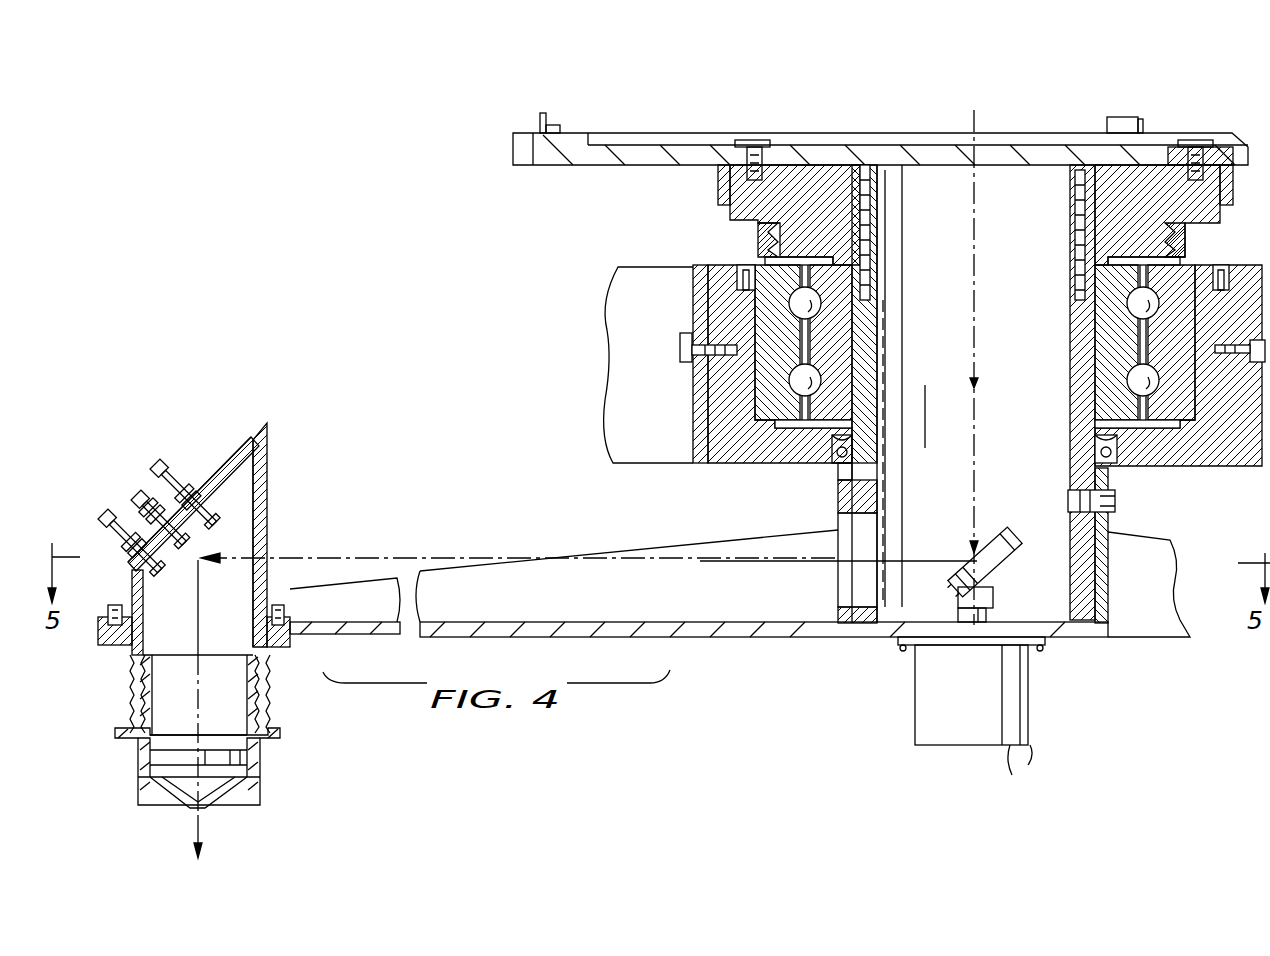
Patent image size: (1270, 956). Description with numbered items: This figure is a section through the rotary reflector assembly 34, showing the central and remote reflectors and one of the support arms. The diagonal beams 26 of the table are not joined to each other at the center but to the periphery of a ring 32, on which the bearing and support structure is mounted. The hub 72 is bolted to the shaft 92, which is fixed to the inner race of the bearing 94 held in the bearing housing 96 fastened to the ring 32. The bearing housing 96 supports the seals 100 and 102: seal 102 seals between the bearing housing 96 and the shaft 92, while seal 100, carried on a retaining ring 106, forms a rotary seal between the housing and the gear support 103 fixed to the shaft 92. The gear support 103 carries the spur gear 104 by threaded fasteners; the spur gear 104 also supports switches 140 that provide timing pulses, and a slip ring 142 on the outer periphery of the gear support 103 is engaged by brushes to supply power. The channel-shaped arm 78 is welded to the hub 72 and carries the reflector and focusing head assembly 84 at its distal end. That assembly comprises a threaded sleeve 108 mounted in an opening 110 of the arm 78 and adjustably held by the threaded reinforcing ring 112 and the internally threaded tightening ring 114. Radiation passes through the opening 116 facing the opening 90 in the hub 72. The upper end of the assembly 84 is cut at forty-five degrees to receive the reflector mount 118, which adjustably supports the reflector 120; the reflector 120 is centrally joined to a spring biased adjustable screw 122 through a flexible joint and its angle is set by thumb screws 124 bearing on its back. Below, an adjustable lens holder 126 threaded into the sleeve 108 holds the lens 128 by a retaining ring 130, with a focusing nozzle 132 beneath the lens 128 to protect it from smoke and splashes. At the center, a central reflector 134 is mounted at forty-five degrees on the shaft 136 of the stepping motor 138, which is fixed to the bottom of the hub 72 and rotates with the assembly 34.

The diagonal beams 26 is at (625, 285).
The ring 32 is at (700, 432).
The rotary reflector assembly 34 is at (620, 542).
The hub 72 is at (840, 485).
The arm 78 is at (732, 637).
The reflector and focusing head assembly 84 is at (272, 452).
The opening 90 is at (840, 585).
The shaft 92 is at (1072, 410).
The bearing 94 is at (1180, 270).
The bearing housing 96 is at (1180, 467).
The seal 100 is at (762, 236).
The seal 102 is at (1108, 466).
The gear support 103 is at (1147, 182).
The spur gear 104 is at (550, 162).
The retaining ring 106 is at (740, 268).
The threaded sleeve 108 is at (132, 676).
The opening 110 is at (130, 627).
The threaded reinforcing ring 112 is at (285, 612).
The internally threaded tightening ring 114 is at (290, 645).
The opening 116 is at (262, 522).
The reflector mount 118 is at (150, 495).
The reflector 120 is at (175, 578).
The spring biased adjustable screw 122 is at (140, 510).
The thumb screws 124 is at (185, 482).
The adjustable lens holder 126 is at (270, 745).
The lens 128 is at (255, 765).
The retaining ring 130 is at (262, 700).
The focusing nozzle 132 is at (225, 808).
The central reflector 134 is at (1022, 514).
The shaft 136 is at (990, 615).
The stepping motor 138 is at (1029, 700).
The switches 140 is at (540, 122).
The slip ring 142 is at (720, 190).